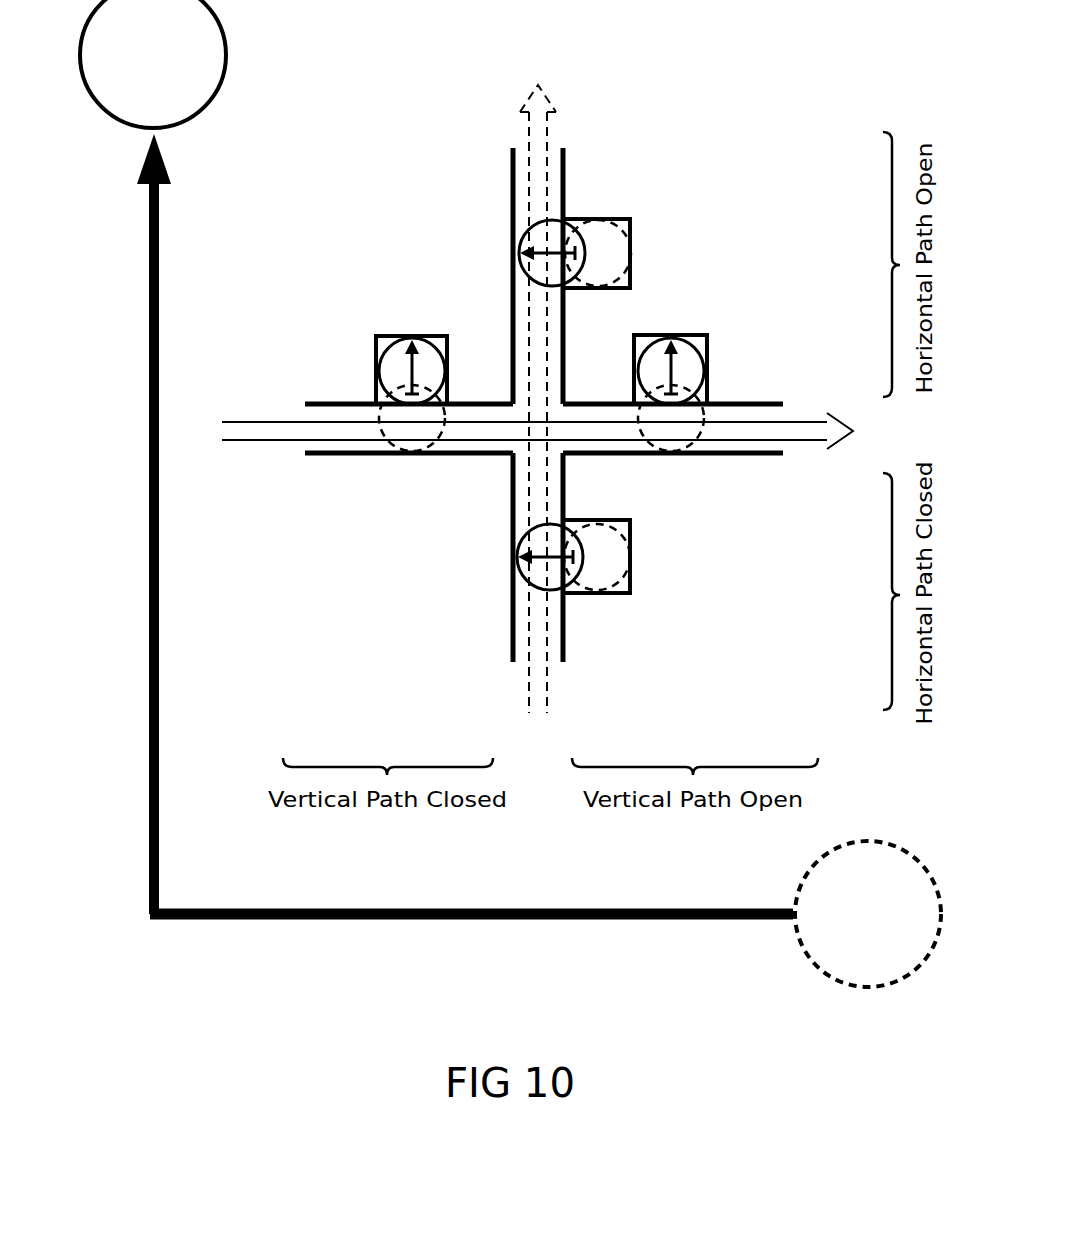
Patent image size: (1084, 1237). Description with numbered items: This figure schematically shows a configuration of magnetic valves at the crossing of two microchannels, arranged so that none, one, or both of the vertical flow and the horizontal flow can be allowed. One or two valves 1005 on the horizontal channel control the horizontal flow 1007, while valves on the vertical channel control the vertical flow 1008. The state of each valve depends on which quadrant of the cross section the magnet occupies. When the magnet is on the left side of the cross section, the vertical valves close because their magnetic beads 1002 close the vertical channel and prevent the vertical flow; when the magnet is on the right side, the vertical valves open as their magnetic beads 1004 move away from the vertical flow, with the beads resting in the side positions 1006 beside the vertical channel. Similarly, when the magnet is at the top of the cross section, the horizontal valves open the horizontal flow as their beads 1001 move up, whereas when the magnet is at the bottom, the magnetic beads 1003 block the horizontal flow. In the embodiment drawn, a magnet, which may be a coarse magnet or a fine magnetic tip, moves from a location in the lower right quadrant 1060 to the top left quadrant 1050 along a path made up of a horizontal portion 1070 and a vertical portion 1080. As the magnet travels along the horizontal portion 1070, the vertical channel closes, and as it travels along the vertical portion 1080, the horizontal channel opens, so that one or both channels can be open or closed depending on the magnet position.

The magnetic beads of horizontal valves 1001 is at (386, 337).
The magnetic beads of vertical valves 1002 is at (531, 226).
The magnetic beads blocking horizontal flow 1003 is at (430, 452).
The magnetic beads of open vertical valves 1004 is at (616, 218).
The valves on horizontal channel 1005 is at (438, 336).
The second valve element in side pocket position 1006 is at (632, 218).
The horizontal flow 1007 is at (310, 456).
The vertical flow 1008 is at (530, 674).
The top left quadrant 1050 is at (227, 48).
The lower right quadrant 1060 is at (806, 947).
The horizontal portion of magnet path 1070 is at (346, 920).
The vertical portion of magnet path 1080 is at (158, 735).